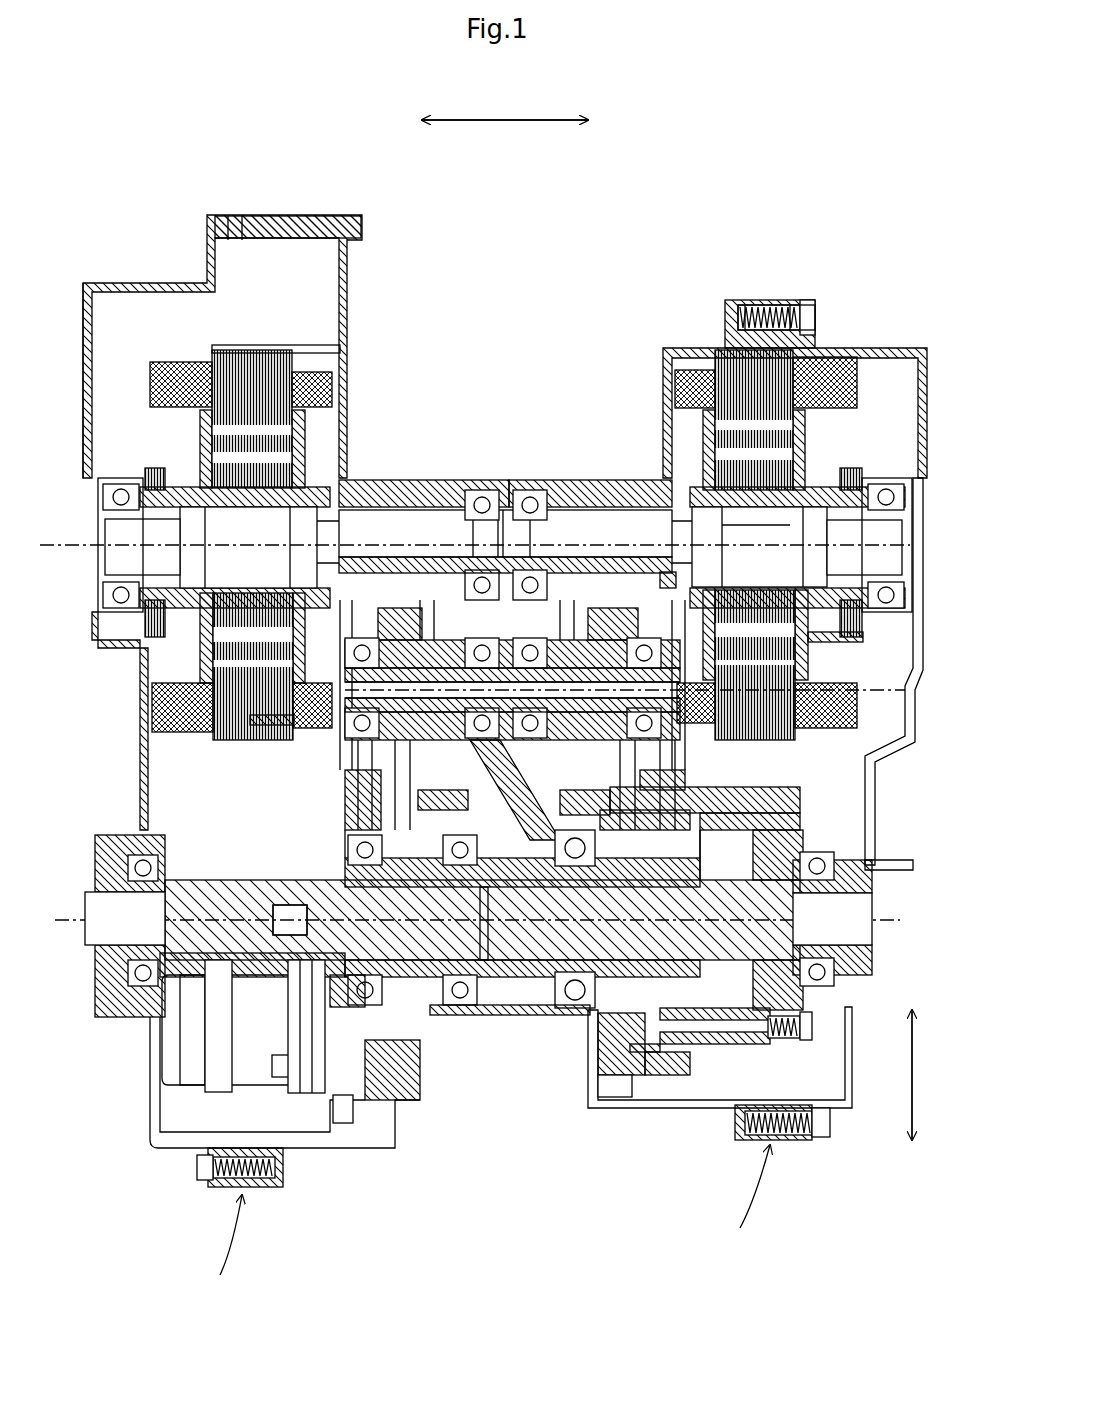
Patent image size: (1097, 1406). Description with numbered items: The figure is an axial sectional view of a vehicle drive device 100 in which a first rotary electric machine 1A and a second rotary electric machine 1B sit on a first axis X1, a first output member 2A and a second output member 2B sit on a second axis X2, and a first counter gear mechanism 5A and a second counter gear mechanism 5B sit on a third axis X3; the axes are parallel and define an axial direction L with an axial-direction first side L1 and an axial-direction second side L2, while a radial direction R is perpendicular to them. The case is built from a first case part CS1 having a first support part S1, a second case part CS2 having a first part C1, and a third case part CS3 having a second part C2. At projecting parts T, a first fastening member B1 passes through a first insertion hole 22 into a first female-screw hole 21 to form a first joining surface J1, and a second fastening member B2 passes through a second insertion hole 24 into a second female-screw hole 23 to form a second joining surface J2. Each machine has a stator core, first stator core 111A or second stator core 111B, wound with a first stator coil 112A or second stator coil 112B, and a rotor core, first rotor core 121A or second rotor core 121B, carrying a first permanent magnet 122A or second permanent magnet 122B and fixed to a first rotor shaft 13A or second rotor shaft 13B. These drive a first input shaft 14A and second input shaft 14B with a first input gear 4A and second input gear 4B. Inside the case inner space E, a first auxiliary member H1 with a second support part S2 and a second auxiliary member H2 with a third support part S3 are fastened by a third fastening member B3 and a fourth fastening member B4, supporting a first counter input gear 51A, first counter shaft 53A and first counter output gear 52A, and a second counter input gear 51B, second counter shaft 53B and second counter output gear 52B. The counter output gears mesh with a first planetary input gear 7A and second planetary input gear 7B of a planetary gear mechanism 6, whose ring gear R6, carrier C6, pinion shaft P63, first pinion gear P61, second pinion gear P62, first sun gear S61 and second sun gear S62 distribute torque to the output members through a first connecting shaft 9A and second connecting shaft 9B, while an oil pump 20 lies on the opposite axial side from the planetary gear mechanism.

The vehicle drive device 100 is at (178, 135).
The first rotary electric machine 1A is at (720, 453).
The second rotary electric machine 1B is at (273, 538).
The first stator core 111A is at (735, 300).
The second stator core 111B is at (245, 350).
The first stator coil 112A is at (850, 378).
The second stator coil 112B is at (185, 735).
The first rotor core 121A is at (705, 430).
The second rotor core 121B is at (318, 640).
The first permanent magnet 122A is at (700, 440).
The second permanent magnet 122B is at (320, 412).
The first rotor shaft 13A is at (830, 485).
The second rotor shaft 13B is at (190, 485).
The first input shaft 14A is at (660, 505).
The second input shaft 14B is at (400, 492).
The first output member 2A is at (872, 958).
The second output member 2B is at (88, 950).
The oil pump 20 is at (308, 1095).
The first female-screw hole 21 is at (745, 303).
The first insertion hole 22 is at (790, 303).
The second female-screw hole 23 is at (270, 1158).
The second insertion hole 24 is at (226, 1158).
The first input gear 4A is at (565, 480).
The second input gear 4B is at (456, 480).
The first counter gear mechanism 5A is at (612, 480).
The second counter gear mechanism 5B is at (392, 480).
The planetary gear mechanism 6 is at (802, 1053).
The first planetary input gear 7A is at (616, 1097).
The second planetary input gear 7B is at (420, 1100).
The first connecting shaft 9A is at (440, 977).
The second connecting shaft 9B is at (540, 1012).
The first counter input gear 51A is at (660, 776).
The second counter input gear 51B is at (345, 800).
The first counter output gear 52A is at (547, 642).
The second counter output gear 52B is at (395, 616).
The first counter shaft 53A is at (645, 750).
The second counter shaft 53B is at (352, 770).
The first fastening member B1 is at (808, 300).
The second fastening member B2 is at (197, 1168).
The third fastening member B3 is at (676, 580).
The fourth fastening member B4 is at (345, 1125).
The first part C1 is at (927, 412).
The second part C2 is at (140, 786).
The carrier C6 is at (803, 1017).
The first case part CS1 is at (300, 215).
The second case part CS2 is at (860, 348).
The third case part CS3 is at (93, 283).
The case inner space E is at (242, 868).
The first auxiliary member H1 is at (722, 530).
The second auxiliary member H2 is at (345, 842).
The first joining surface J1 is at (770, 298).
The second joining surface J2 is at (235, 213).
The axial direction L is at (505, 103).
The axial-direction first side L1 is at (602, 120).
The axial-direction second side L2 is at (405, 120).
The first pinion gear P61 is at (757, 788).
The second pinion gear P62 is at (812, 848).
The pinion shaft P63 is at (805, 800).
The radial direction R is at (927, 1075).
The ring gear R6 is at (672, 1077).
The first support part S1 is at (520, 885).
The second support part S2 is at (800, 640).
The third support part S3 is at (270, 722).
The first sun gear S61 is at (735, 1022).
The second sun gear S62 is at (745, 1050).
The projecting part T is at (489, 1225).
The first axis X1 is at (498, 535).
The second axis X2 is at (501, 920).
The third axis X3 is at (640, 690).